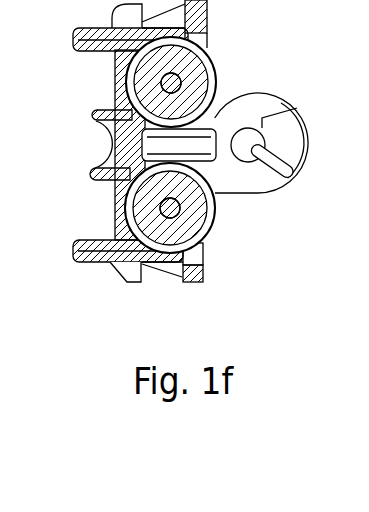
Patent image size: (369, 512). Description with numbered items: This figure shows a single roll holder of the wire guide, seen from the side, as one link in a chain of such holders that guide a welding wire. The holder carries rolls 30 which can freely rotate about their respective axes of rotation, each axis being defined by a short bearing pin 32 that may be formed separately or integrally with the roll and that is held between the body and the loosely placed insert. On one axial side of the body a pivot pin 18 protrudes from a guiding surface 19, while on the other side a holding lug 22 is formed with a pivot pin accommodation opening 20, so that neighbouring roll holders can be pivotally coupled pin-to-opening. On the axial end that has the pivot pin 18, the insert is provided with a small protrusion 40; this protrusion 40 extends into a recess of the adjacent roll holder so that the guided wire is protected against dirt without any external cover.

The pivot pin 18 is at (127, 274).
The guiding surface 19 is at (86, 264).
The pivot pin accommodation opening 20 is at (297, 169).
The holding lug 22 is at (285, 138).
The roll 30 is at (200, 66).
The bearing pin 32 is at (138, 88).
The protrusion 40 is at (93, 186).